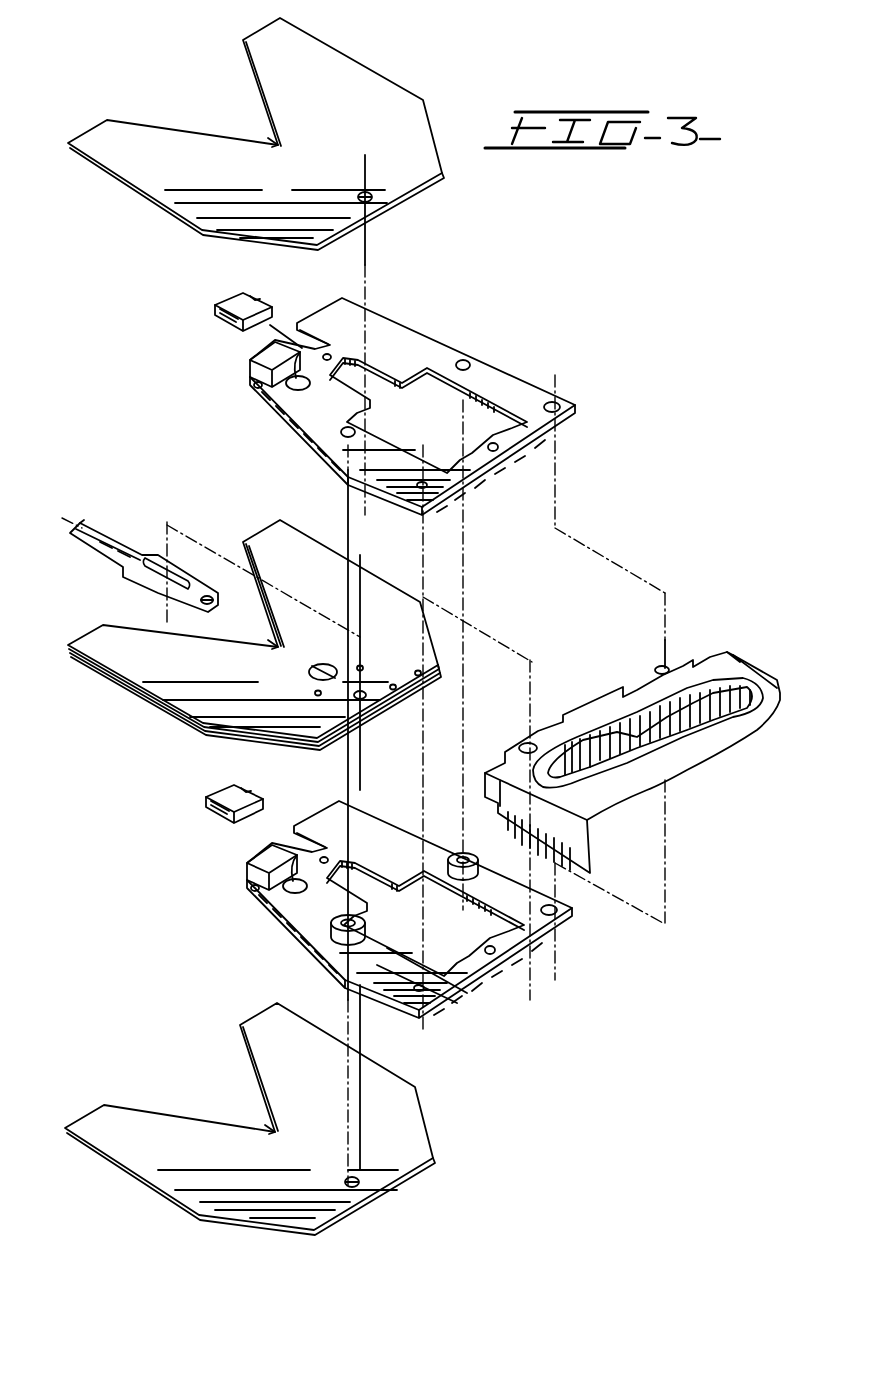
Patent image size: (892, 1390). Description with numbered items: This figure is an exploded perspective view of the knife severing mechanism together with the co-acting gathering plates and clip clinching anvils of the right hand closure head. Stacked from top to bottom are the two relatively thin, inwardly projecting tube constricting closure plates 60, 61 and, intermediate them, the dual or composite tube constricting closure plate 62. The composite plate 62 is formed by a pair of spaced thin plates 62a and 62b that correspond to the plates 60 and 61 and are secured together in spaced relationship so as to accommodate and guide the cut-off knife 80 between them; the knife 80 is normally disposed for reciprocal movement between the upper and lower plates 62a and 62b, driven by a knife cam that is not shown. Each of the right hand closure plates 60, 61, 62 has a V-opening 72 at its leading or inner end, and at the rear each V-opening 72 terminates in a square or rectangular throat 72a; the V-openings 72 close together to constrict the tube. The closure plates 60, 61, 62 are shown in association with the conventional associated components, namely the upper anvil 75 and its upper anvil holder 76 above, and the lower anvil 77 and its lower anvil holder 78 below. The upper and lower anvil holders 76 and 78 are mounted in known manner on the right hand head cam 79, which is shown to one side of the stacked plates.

The tube constricting closure plate 60 is at (394, 93).
The tube constricting closure plate 61 is at (313, 1022).
The composite tube constricting closure plate 62 is at (254, 644).
The plate 62a is at (188, 733).
The plate 62b is at (272, 748).
The V-opening 72 is at (256, 66).
The square or rectangular throat 72a is at (274, 133).
The upper anvil 75 is at (247, 294).
The upper anvil holder 76 is at (463, 360).
The lower anvil 77 is at (246, 785).
The lower anvil holder 78 is at (402, 825).
The right hand head cam 79 is at (720, 652).
The cut-off knife 80 is at (140, 558).